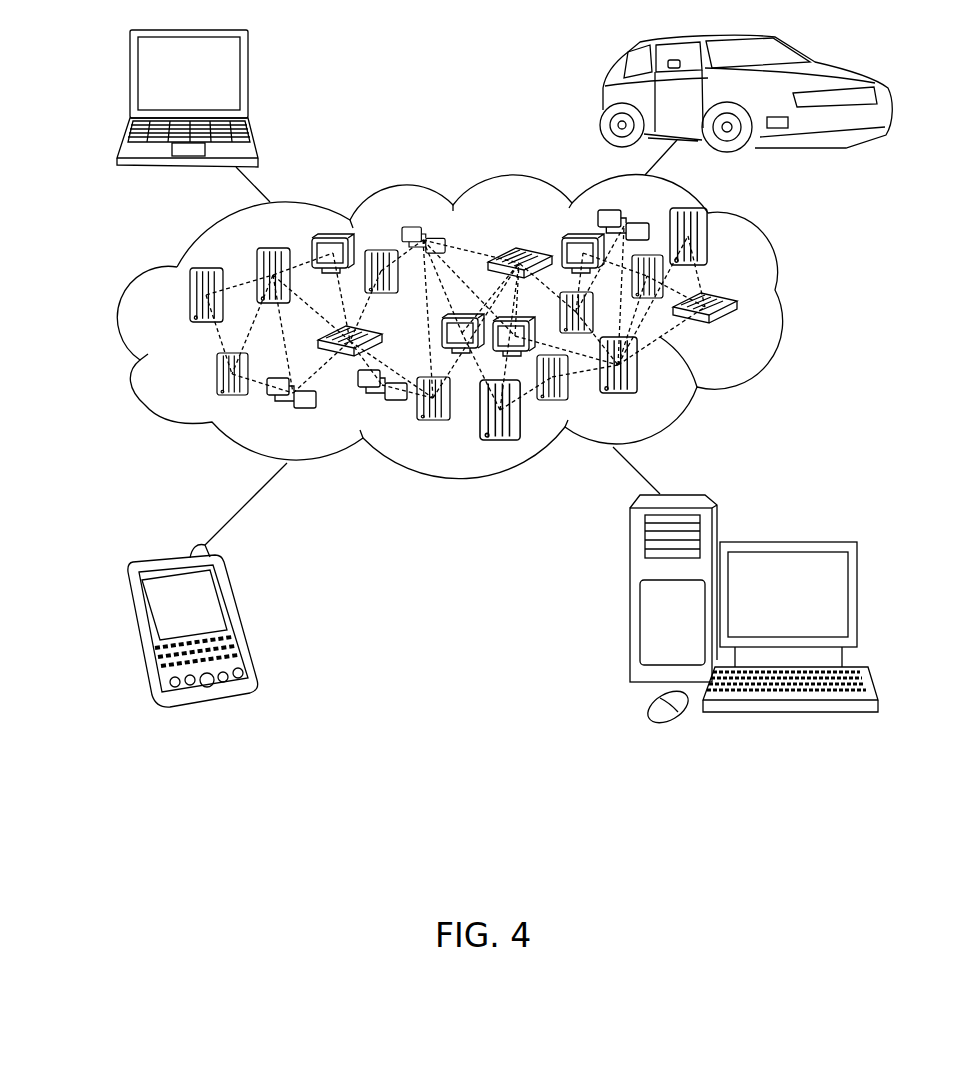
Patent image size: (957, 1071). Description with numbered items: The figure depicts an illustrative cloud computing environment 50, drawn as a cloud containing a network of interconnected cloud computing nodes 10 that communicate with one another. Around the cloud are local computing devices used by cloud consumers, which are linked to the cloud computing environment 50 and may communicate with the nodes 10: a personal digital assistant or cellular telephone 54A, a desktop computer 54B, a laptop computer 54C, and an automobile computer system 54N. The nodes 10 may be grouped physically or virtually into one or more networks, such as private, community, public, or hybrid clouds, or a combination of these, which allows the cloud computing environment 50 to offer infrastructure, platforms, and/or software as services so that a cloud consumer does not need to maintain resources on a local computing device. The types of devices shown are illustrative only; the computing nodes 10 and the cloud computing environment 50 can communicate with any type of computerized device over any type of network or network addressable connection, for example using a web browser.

The cloud computing nodes 10 is at (768, 343).
The cloud computing environment 50 is at (788, 306).
The personal digital assistant (PDA) or cellular telephone 54A is at (243, 615).
The desktop computer 54B is at (785, 542).
The laptop computer 54C is at (250, 83).
The automobile computer system 54N is at (605, 98).